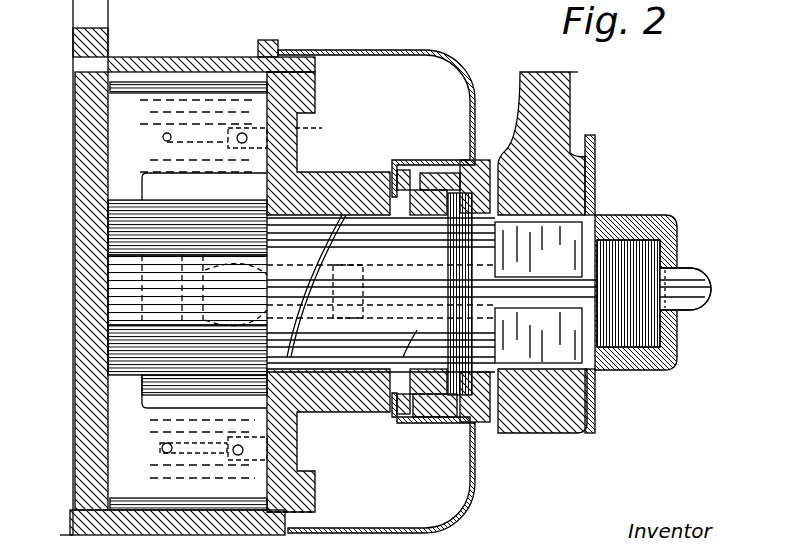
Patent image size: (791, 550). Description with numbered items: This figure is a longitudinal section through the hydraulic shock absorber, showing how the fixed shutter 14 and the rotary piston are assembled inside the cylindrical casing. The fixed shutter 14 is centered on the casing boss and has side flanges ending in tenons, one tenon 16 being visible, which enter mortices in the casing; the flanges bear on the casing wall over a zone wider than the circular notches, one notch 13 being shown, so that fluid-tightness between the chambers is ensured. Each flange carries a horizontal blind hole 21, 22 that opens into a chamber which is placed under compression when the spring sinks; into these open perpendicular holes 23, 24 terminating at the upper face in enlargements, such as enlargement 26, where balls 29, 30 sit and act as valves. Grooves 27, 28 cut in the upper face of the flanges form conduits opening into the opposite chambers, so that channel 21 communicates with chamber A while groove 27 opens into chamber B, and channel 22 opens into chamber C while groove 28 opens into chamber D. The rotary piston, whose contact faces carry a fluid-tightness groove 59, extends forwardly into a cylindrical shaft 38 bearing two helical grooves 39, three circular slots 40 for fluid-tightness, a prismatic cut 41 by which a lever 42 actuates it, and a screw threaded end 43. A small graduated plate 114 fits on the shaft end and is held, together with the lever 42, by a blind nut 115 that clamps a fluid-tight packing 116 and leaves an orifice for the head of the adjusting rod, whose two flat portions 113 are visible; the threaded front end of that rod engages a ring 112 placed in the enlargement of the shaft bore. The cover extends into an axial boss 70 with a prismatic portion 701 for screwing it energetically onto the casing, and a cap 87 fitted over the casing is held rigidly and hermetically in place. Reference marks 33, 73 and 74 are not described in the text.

The circular notch 13 is at (115, 510).
The fixed shutter 14 is at (118, 117).
The tenon 16 is at (117, 190).
The blind hole 21 is at (162, 448).
The blind hole 22 is at (163, 136).
The perpendicular hole 23 is at (160, 156).
The perpendicular hole 24 is at (198, 453).
The enlargement 26 is at (295, 488).
The groove 27 is at (270, 453).
The groove 28 is at (262, 146).
The ball 29 is at (298, 115).
The ball 30 is at (267, 433).
The terminal 33 is at (288, 5).
The cylindrical shaft 38 is at (463, 295).
The helical grooves 39 is at (312, 248).
The circular slots 40 is at (447, 245).
The prismatic cut portion 41 is at (538, 292).
The lever 42 is at (538, 80).
The screw threaded portion 43 is at (636, 368).
The fluid-tightness groove 59 is at (160, 250).
The axial boss 70 is at (330, 187).
The prismatic portion 701 is at (366, 178).
The terminal 73 is at (214, 5).
The terminal 74 is at (375, 0).
The cap 87 is at (470, 495).
The ring 112 is at (685, 283).
The flat portions 113 is at (697, 310).
The graduated plate 114 is at (596, 148).
The nut 115 is at (624, 222).
The fluid-tight packing 116 is at (672, 228).
The chamber A is at (73, 38).
The chamber B is at (148, 489).
The chamber C is at (187, 108).
The chamber D is at (66, 165).